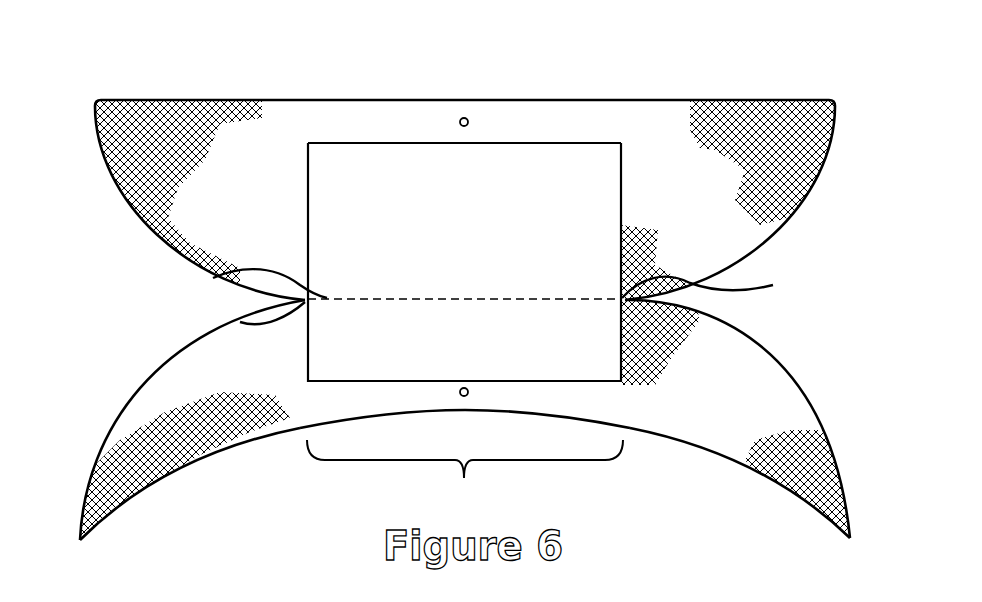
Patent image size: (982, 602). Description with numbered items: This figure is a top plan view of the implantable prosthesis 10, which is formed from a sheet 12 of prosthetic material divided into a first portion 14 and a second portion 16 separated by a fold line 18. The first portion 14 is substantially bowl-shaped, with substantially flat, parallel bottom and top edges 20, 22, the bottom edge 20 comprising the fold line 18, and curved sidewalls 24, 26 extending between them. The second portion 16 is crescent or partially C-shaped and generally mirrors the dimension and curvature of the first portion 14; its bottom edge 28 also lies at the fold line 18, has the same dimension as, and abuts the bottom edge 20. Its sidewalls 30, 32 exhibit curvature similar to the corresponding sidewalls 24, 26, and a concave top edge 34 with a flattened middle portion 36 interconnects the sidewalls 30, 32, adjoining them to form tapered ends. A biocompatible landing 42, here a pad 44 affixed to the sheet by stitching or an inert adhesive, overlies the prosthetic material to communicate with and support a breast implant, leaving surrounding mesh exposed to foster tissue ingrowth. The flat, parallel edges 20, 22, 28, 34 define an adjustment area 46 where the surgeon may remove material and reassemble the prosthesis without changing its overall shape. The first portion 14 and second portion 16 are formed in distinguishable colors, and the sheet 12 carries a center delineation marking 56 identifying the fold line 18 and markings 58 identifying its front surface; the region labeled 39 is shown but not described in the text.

The implantable prosthesis 10 is at (593, 88).
The sheet 12 is at (723, 100).
The first portion 14 is at (780, 228).
The second portion 16 is at (773, 358).
The fold line 18 is at (305, 300).
The bottom edge 20 is at (713, 305).
The top edge 22 is at (190, 100).
The curved sidewall 24 is at (117, 185).
The curved sidewall 26 is at (822, 152).
The bottom edge 28 is at (240, 322).
The sidewall 30 is at (113, 413).
The sidewall 32 is at (830, 433).
The concave top edge 34 is at (170, 467).
The flattened middle portion 36 is at (460, 412).
The topsheet 39 is at (272, 130).
The biocompatible landing 42 is at (388, 143).
The pad 44 is at (462, 257).
The adjustment area 46 is at (465, 474).
The center delineation marking 56 is at (370, 300).
The markings 58 is at (466, 118).